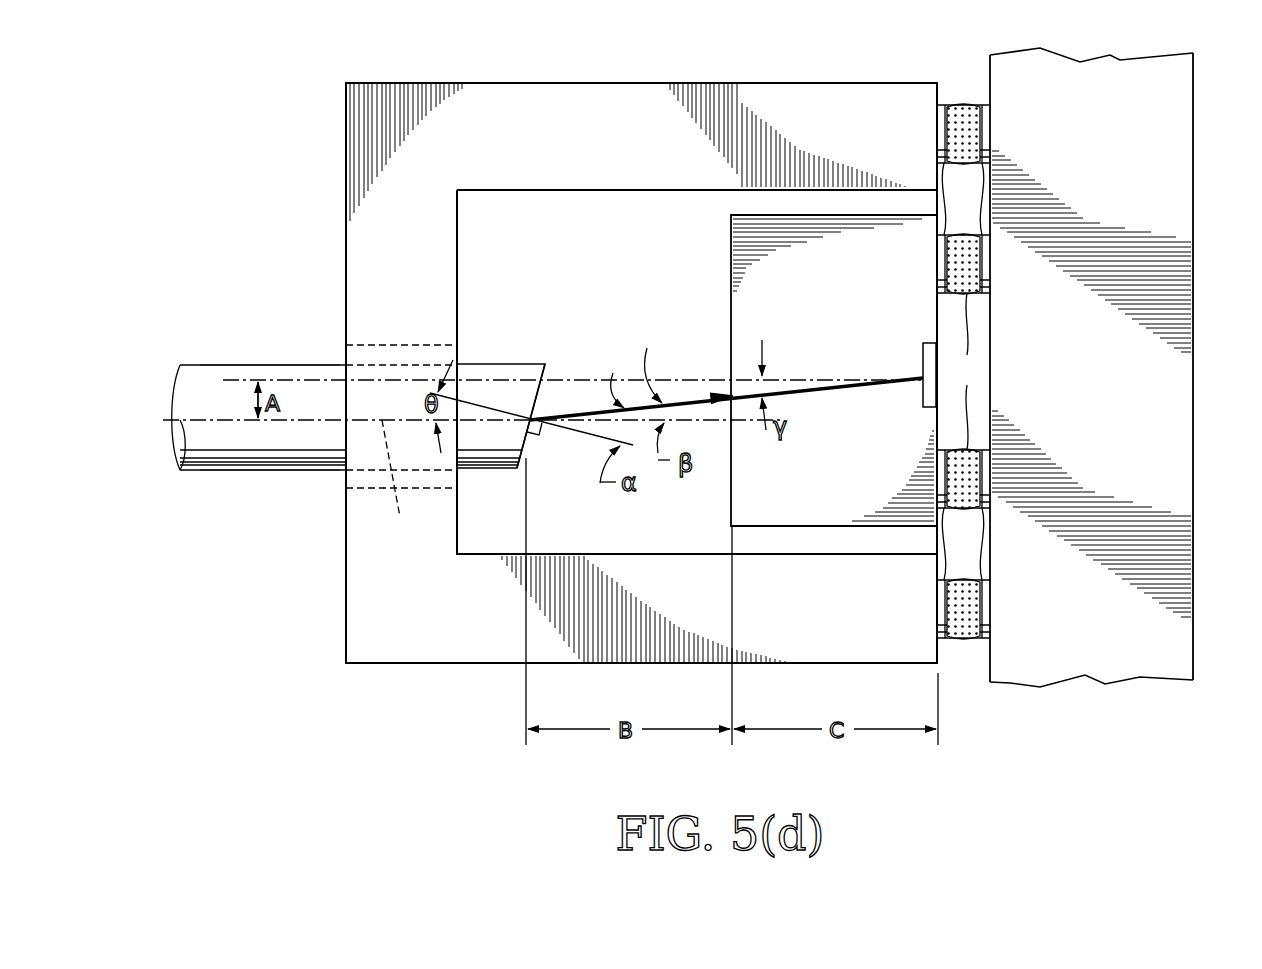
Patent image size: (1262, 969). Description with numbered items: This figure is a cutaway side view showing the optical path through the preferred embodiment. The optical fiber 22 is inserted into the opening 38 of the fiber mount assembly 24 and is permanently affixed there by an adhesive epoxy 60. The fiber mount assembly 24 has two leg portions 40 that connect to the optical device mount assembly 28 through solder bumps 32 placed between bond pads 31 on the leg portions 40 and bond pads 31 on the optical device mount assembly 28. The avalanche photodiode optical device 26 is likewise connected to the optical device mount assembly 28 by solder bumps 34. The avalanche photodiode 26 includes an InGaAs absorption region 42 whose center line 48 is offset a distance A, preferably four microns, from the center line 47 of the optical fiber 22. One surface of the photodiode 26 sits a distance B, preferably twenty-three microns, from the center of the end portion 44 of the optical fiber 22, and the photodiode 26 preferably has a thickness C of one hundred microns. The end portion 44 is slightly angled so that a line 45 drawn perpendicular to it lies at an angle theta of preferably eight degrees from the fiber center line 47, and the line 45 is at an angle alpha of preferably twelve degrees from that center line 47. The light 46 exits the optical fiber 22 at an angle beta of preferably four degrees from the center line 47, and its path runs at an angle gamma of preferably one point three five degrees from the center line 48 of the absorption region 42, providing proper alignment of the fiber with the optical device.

The optical fiber 22 is at (240, 453).
The fiber mount assembly 24 is at (422, 123).
The avalanche photodiode optical device 26 is at (731, 262).
The optical device mount assembly 28 is at (1195, 172).
The bond pads 31 is at (962, 371).
The solder bumps 32 is at (962, 105).
The solder bumps 34 is at (967, 371).
The opening 38 is at (440, 348).
The leg portions 40 is at (428, 663).
The InGaAs absorption region 42 is at (923, 400).
The end portion 44 is at (547, 370).
The line perpendicular to end portion 45 is at (570, 432).
The light 46 is at (668, 400).
The center line of optical fiber 47 is at (400, 483).
The center line of InGaAs absorption region 48 is at (808, 377).
The adhesive epoxy 60 is at (275, 365).